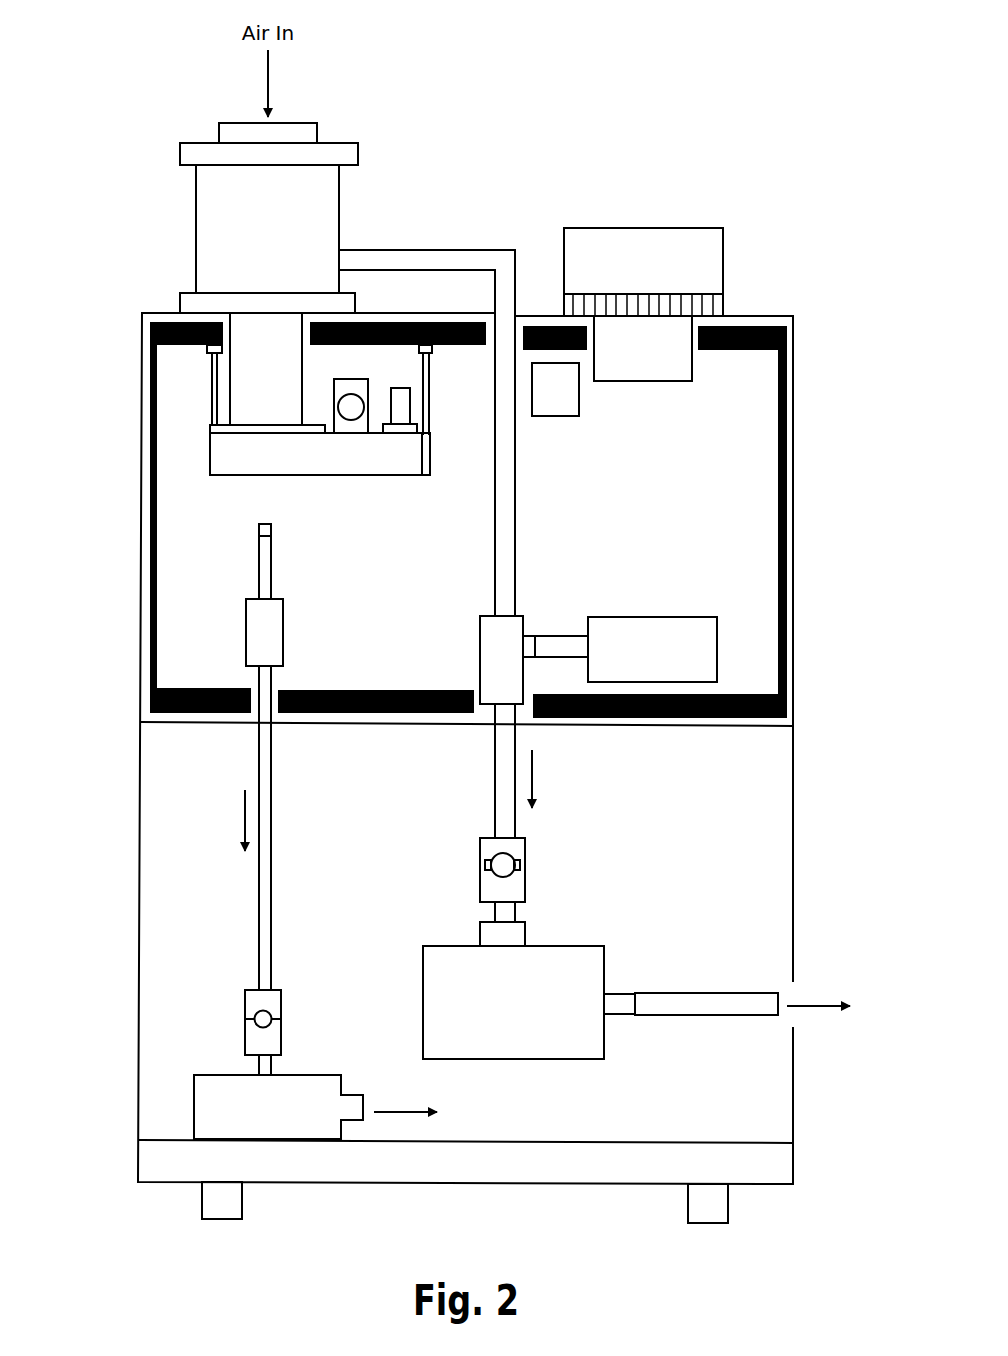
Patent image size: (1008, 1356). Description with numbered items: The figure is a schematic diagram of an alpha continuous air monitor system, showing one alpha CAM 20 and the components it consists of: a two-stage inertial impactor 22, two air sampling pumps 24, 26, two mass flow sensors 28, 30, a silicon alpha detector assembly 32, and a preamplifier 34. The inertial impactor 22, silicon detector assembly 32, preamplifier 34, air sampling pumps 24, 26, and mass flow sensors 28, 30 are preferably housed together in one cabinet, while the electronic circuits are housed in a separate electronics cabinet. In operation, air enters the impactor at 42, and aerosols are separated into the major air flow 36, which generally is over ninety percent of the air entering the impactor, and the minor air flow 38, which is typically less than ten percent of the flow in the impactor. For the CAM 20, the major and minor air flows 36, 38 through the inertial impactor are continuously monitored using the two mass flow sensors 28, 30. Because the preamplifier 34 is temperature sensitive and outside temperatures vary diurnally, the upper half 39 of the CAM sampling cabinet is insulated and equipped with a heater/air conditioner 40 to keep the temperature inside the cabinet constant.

The alpha CAM 20 is at (829, 247).
The two-stage inertial impactor 22 is at (310, 217).
The air sampling pump 24 is at (530, 1025).
The air sampling pump 26 is at (287, 1118).
The mass flow sensor 28 is at (696, 653).
The mass flow sensor 30 is at (246, 635).
The silicon alpha detector assembly 32 is at (203, 452).
The preamplifier 34 is at (579, 398).
The major air flow 36 is at (457, 258).
The minor air flow 38 is at (255, 929).
The upper half of CAM sampling cabinet 39 is at (703, 496).
The heater/air conditioner 40 is at (645, 247).
The air inlet of impactor 42 is at (293, 123).